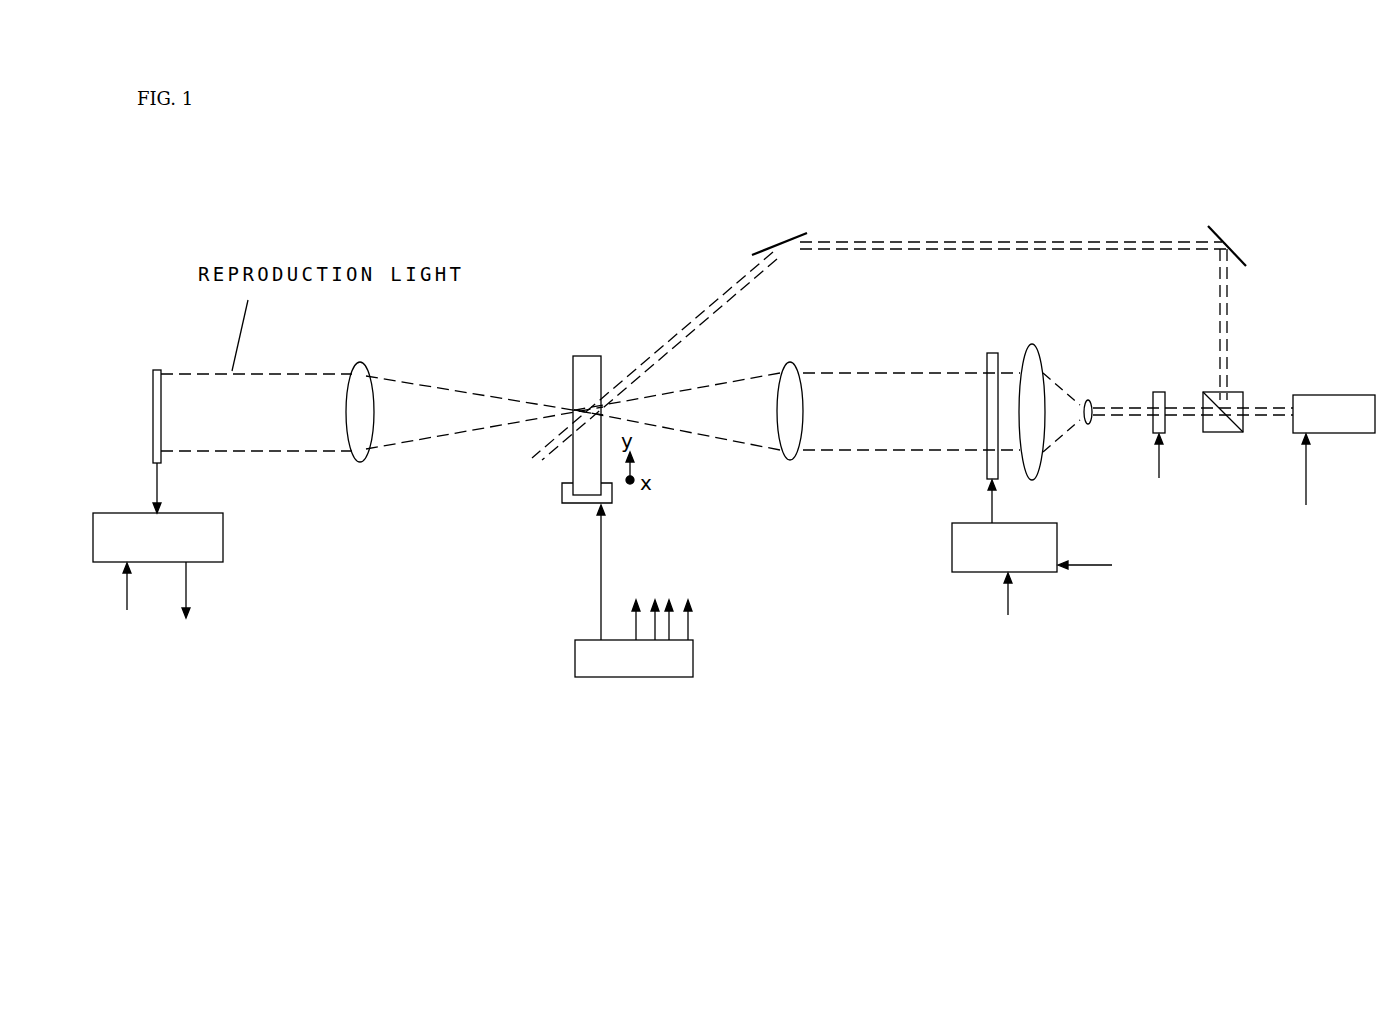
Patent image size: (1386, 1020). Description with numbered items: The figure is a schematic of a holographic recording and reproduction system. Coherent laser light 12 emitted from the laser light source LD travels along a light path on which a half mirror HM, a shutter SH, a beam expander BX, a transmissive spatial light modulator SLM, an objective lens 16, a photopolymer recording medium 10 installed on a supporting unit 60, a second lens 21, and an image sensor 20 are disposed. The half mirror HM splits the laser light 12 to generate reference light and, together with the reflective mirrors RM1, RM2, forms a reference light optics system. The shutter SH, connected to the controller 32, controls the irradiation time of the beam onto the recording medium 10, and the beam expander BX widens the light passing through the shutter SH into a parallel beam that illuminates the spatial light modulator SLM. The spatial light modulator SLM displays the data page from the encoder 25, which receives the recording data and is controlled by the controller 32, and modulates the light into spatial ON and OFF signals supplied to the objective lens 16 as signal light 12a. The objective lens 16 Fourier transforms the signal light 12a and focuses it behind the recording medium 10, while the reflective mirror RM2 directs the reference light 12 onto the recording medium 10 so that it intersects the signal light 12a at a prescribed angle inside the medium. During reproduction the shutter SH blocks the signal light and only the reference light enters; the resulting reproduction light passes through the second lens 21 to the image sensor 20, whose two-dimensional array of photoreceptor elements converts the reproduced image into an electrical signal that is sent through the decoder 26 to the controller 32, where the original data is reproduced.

The recording medium 10 is at (580, 373).
The laser light 12 is at (903, 241).
The signal light 12a is at (830, 449).
The objective lens 16 is at (787, 367).
The image sensor 20 is at (159, 368).
The second lens 21 is at (363, 366).
The encoder 25 is at (950, 561).
The decoder 26 is at (218, 545).
The controller 32 is at (621, 677).
The supporting unit 60 is at (583, 506).
The reflective mirror RM1 is at (1235, 250).
The reflective mirror RM2 is at (780, 244).
The spatial light modulator SLM is at (996, 352).
The beam expander BX is at (1036, 458).
The shutter SH is at (1157, 390).
The half mirror HM is at (1230, 425).
The laser light source LD is at (1319, 395).